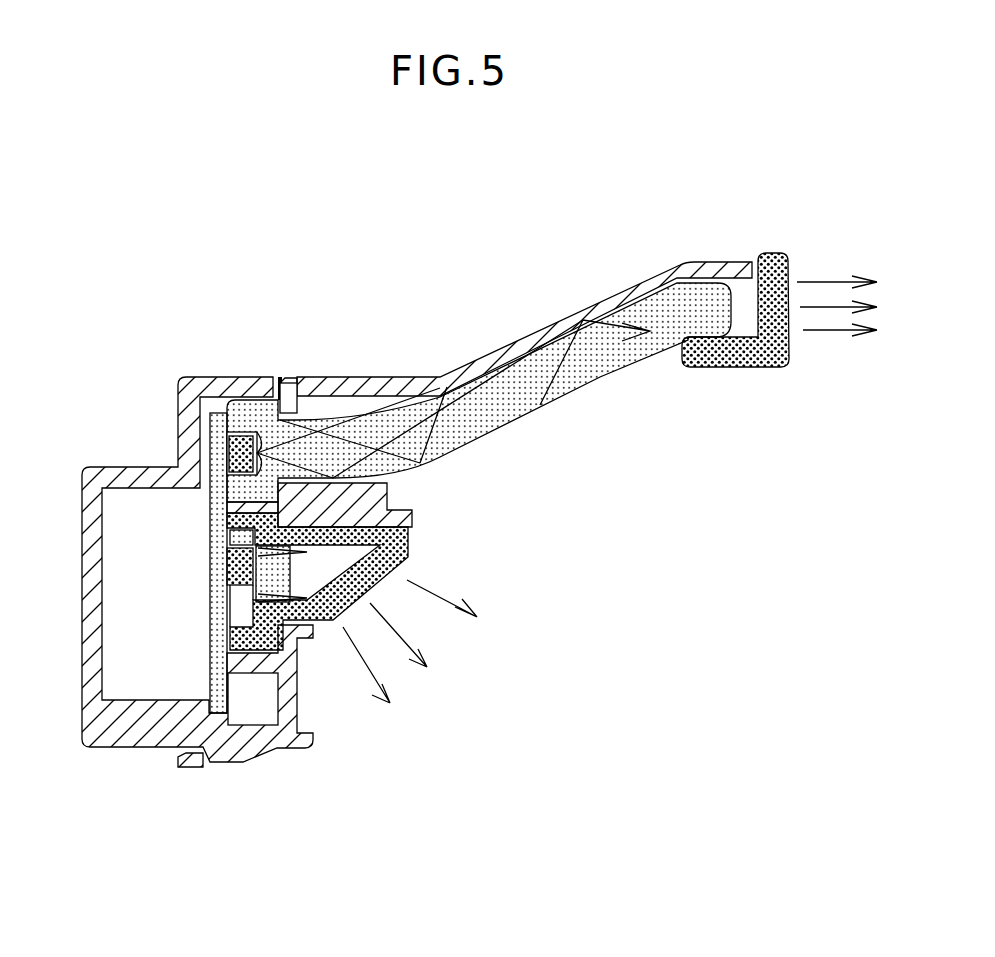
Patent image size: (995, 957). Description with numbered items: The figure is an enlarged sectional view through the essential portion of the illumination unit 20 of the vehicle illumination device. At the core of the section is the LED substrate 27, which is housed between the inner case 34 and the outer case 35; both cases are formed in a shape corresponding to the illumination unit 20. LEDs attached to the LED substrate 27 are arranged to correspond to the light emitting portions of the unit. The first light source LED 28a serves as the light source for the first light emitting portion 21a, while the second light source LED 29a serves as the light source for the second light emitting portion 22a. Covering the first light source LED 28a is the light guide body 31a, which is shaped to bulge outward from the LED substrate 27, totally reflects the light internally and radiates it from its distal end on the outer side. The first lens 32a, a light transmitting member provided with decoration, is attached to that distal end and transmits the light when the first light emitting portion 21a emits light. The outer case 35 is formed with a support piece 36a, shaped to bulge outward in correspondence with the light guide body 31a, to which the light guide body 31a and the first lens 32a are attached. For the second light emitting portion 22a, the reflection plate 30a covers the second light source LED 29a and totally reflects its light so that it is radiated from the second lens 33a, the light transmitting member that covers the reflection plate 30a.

The illumination unit 20 is at (124, 216).
The first light emitting portion 21a is at (627, 194).
The second light emitting portion 22a is at (683, 813).
The LED substrate 27 is at (217, 593).
The first light source LED 28a is at (243, 447).
The second light source LED 29a is at (243, 580).
The reflection plate 30a is at (280, 575).
The light guide body 31a is at (543, 367).
The first lens 32a is at (770, 255).
The second lens 33a is at (400, 556).
The inner case 34 is at (92, 640).
The outer case 35 is at (290, 687).
The support piece 36a is at (387, 378).